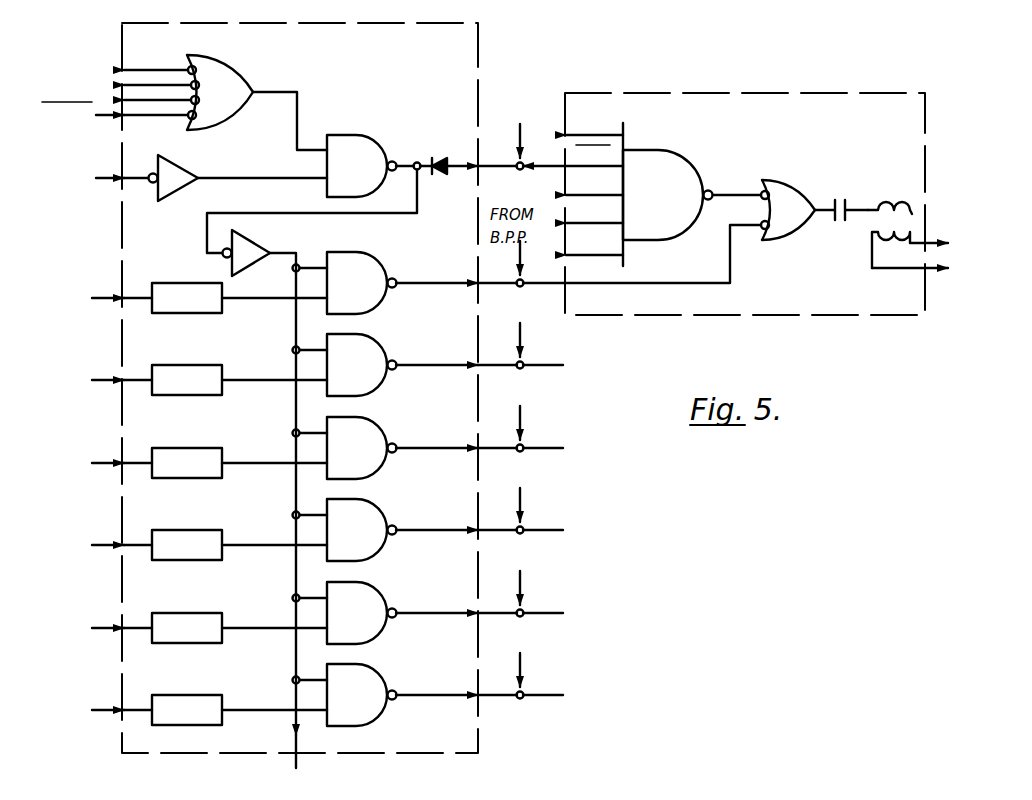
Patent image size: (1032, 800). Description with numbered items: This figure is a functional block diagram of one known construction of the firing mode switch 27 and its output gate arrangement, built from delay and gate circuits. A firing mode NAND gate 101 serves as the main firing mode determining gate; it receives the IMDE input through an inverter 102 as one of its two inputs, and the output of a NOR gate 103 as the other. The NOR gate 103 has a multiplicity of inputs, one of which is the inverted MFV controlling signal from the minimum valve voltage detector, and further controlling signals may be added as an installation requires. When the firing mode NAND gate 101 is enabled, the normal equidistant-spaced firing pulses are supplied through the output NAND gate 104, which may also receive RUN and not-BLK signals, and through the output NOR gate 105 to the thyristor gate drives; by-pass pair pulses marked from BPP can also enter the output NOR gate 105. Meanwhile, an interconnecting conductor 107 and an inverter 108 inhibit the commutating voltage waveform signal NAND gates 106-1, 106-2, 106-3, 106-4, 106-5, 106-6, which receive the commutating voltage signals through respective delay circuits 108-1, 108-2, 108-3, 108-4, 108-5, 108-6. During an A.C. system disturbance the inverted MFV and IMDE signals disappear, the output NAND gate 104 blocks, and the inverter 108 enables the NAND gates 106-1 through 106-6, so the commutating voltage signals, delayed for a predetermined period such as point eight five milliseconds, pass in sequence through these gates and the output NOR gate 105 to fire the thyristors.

The firing mode switch 27 is at (542, 53).
The firing mode NAND gate 101 is at (378, 146).
The inverter 102 is at (185, 165).
The NOR gate 103 is at (226, 56).
The output NAND gate 104 is at (662, 150).
The output NOR gate 105 is at (799, 191).
The commutating voltage waveform signal NAND gate 106-1 is at (376, 256).
The commutating voltage waveform signal NAND gate 106-2 is at (376, 338).
The commutating voltage waveform signal NAND gate 106-3 is at (376, 421).
The commutating voltage waveform signal NAND gate 106-4 is at (376, 503).
The commutating voltage waveform signal NAND gate 106-5 is at (376, 586).
The commutating voltage waveform signal NAND gate 106-6 is at (376, 668).
The interconnecting conductor 107 is at (309, 212).
The inverter 108 is at (249, 244).
The delay circuit 108-1 is at (190, 313).
The delay circuit 108-2 is at (190, 395).
The delay circuit 108-3 is at (190, 478).
The delay circuit 108-4 is at (190, 560).
The delay circuit 108-5 is at (190, 643).
The delay circuit 108-6 is at (190, 725).